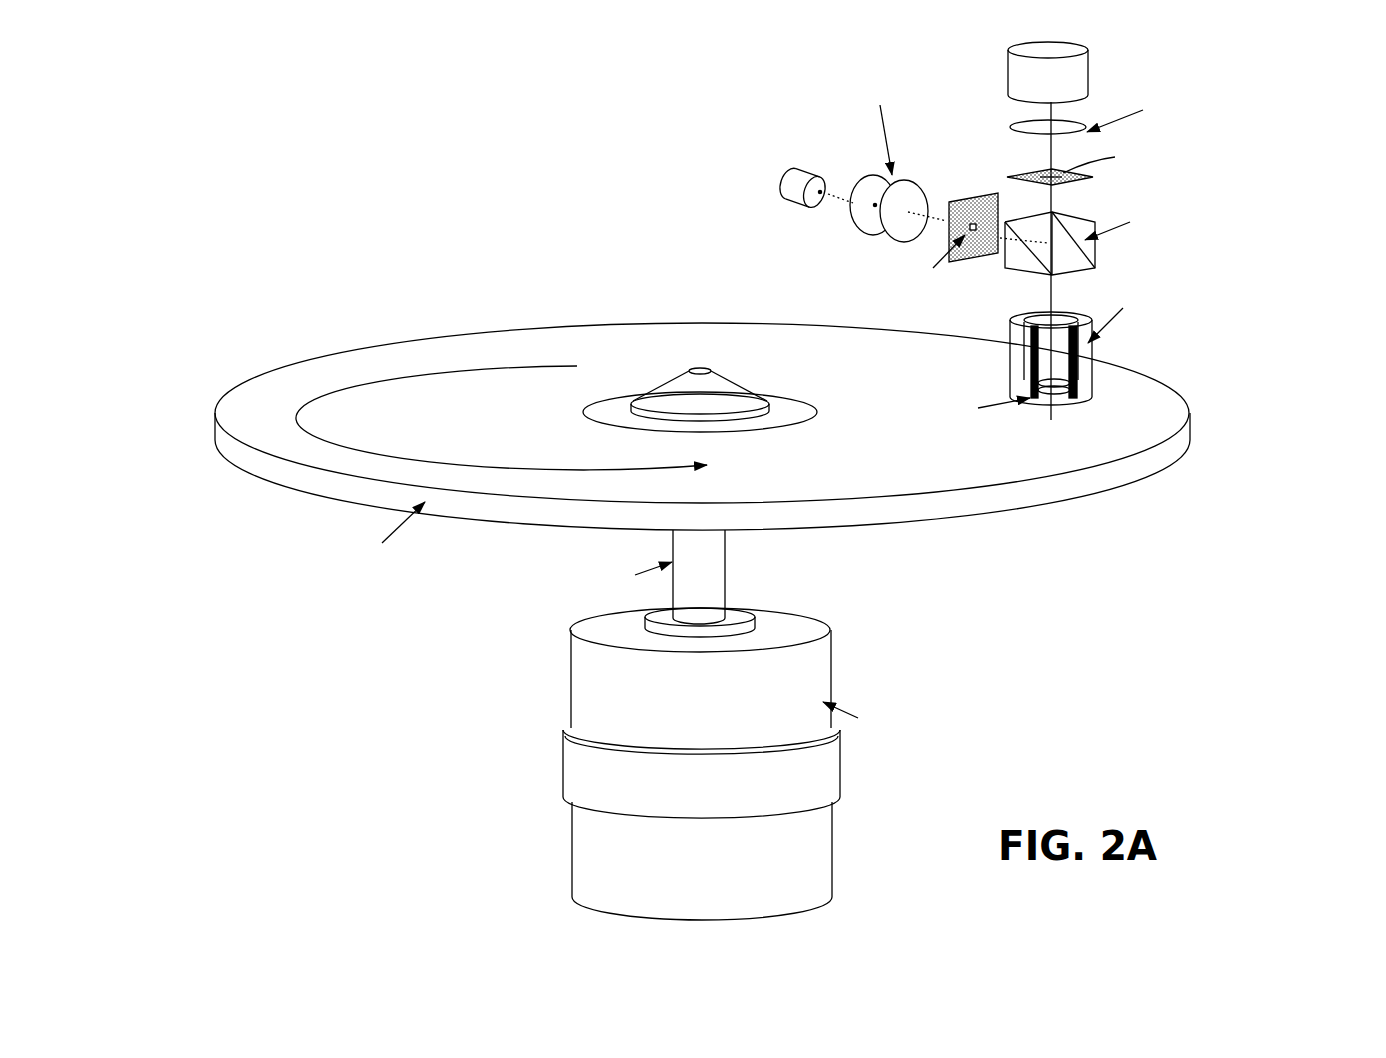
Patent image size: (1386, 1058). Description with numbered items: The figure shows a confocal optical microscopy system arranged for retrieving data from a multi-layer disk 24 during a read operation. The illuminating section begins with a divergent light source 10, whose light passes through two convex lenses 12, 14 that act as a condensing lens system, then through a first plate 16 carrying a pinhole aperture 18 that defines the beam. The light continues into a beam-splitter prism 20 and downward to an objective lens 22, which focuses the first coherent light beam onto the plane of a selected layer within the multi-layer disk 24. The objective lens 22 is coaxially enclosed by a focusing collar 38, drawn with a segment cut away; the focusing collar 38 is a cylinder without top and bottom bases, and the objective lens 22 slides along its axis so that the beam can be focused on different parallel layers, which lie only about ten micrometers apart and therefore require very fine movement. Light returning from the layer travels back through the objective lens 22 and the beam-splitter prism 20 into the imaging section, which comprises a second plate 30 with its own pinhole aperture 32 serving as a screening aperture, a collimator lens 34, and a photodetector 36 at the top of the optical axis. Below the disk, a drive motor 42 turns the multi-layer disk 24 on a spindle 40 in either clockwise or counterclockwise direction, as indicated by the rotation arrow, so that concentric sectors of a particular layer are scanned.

The light source 10 is at (787, 170).
The convex lens 12 is at (850, 218).
The convex lens 14 is at (890, 237).
The first plate 16 is at (963, 263).
The pinhole aperture 18 is at (976, 230).
The beam-splitter prism 20 is at (1097, 252).
The objective lens 22 is at (1092, 395).
The multi-layer disk 24 is at (517, 523).
The second plate 30 is at (1070, 180).
The pinhole aperture 32 is at (1038, 172).
The collimator lens 34 is at (1037, 127).
The photodetector 36 is at (1087, 48).
The focusing collar 38 is at (1092, 352).
The spindle 40 is at (727, 563).
The drive motor 42 is at (833, 650).